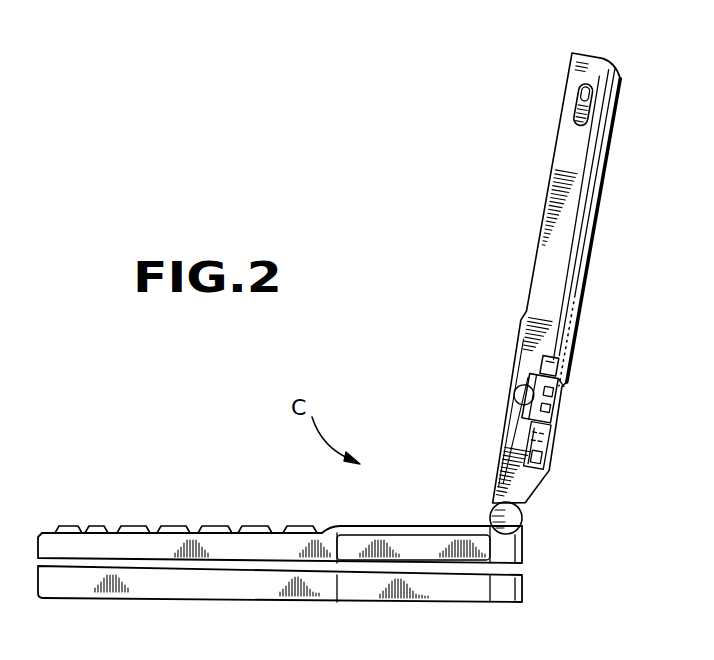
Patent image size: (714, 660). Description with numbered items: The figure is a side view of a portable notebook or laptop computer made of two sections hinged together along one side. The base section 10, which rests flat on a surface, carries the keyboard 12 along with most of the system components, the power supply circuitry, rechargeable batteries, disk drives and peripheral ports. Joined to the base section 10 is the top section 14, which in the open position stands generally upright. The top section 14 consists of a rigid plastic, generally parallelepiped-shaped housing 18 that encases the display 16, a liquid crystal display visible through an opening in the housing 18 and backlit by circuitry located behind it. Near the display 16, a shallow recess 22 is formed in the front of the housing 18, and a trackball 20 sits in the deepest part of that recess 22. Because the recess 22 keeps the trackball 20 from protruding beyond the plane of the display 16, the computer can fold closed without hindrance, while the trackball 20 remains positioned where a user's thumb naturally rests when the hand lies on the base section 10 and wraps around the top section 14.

The base section 10 is at (187, 600).
The keyboard 12 is at (137, 527).
The top section 14 is at (612, 65).
The display 16 is at (542, 217).
The housing 18 is at (590, 267).
The trackball 20 is at (514, 397).
The recess 22 is at (512, 350).